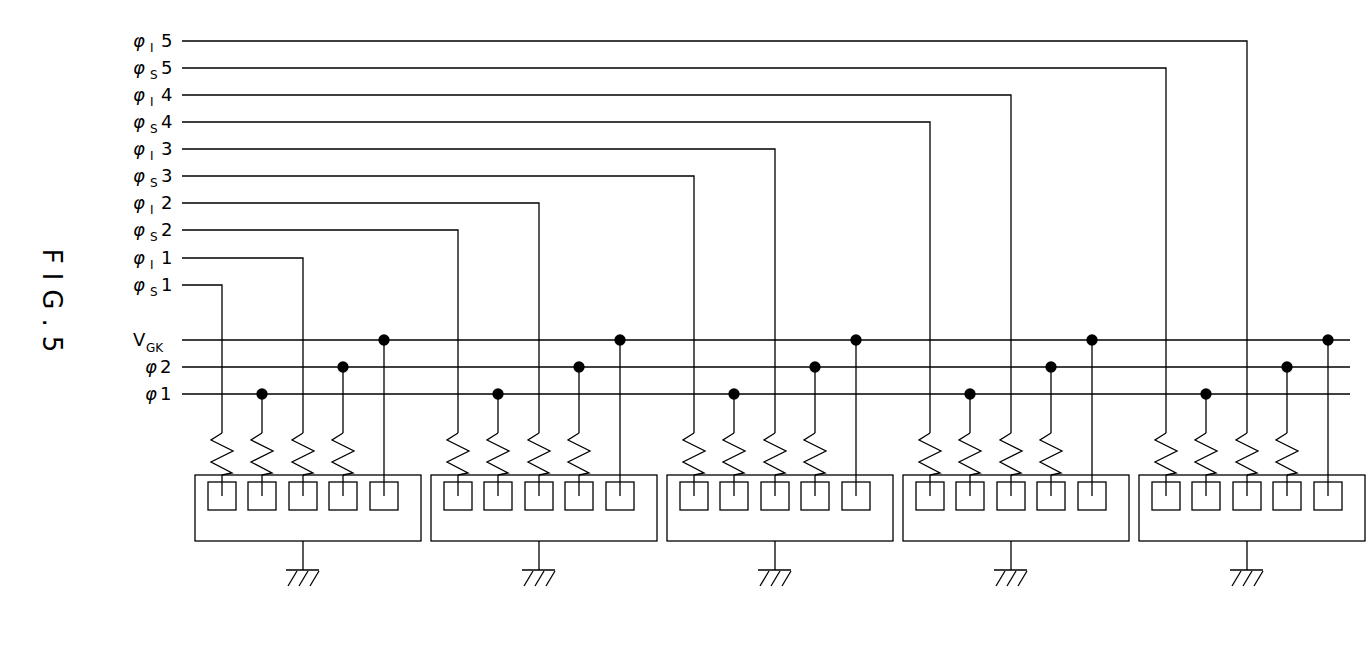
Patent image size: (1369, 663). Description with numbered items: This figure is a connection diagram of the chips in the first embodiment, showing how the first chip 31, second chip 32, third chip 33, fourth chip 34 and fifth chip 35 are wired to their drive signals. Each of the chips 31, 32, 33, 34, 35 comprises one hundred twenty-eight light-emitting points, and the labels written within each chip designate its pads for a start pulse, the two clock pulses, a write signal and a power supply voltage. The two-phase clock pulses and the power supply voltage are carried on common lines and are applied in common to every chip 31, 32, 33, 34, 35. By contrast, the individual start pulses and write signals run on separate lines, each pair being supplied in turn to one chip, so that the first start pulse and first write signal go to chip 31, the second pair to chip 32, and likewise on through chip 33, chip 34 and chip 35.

The first chip 31 is at (253, 542).
The second chip 32 is at (489, 542).
The third chip 33 is at (725, 542).
The fourth chip 34 is at (961, 542).
The fifth chip 35 is at (1197, 542).